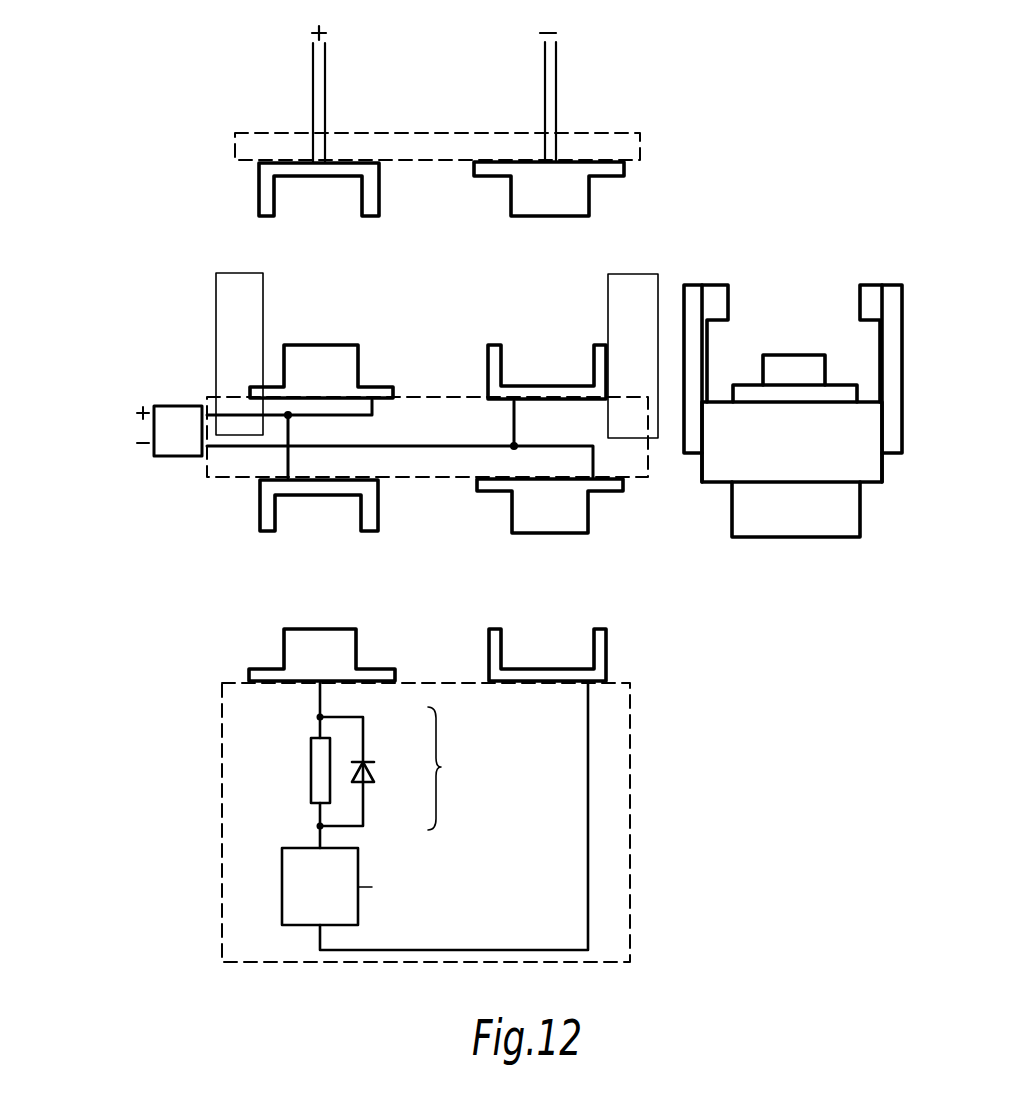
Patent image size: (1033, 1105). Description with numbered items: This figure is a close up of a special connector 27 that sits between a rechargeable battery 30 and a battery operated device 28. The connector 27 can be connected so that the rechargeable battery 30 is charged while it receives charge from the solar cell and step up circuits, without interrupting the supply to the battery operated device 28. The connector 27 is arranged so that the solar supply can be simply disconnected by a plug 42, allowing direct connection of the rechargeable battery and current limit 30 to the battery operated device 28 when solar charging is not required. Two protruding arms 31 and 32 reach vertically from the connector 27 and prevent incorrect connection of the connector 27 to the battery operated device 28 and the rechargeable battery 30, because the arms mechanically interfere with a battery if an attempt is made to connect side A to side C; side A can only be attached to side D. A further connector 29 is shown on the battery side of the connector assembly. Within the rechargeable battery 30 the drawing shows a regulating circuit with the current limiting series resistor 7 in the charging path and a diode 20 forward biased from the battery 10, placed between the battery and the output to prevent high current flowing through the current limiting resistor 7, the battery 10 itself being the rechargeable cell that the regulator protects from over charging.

The battery operated device 28 is at (265, 132).
The protruding arm 32 is at (229, 273).
The protruding arm 31 is at (636, 273).
The special connector 27 is at (207, 397).
The plug 42 is at (183, 440).
The connector 29 is at (520, 537).
The rechargeable battery 30 is at (222, 747).
The series resistor 7 is at (311, 762).
The diode 20 is at (367, 805).
The rechargeable battery 10 is at (331, 898).